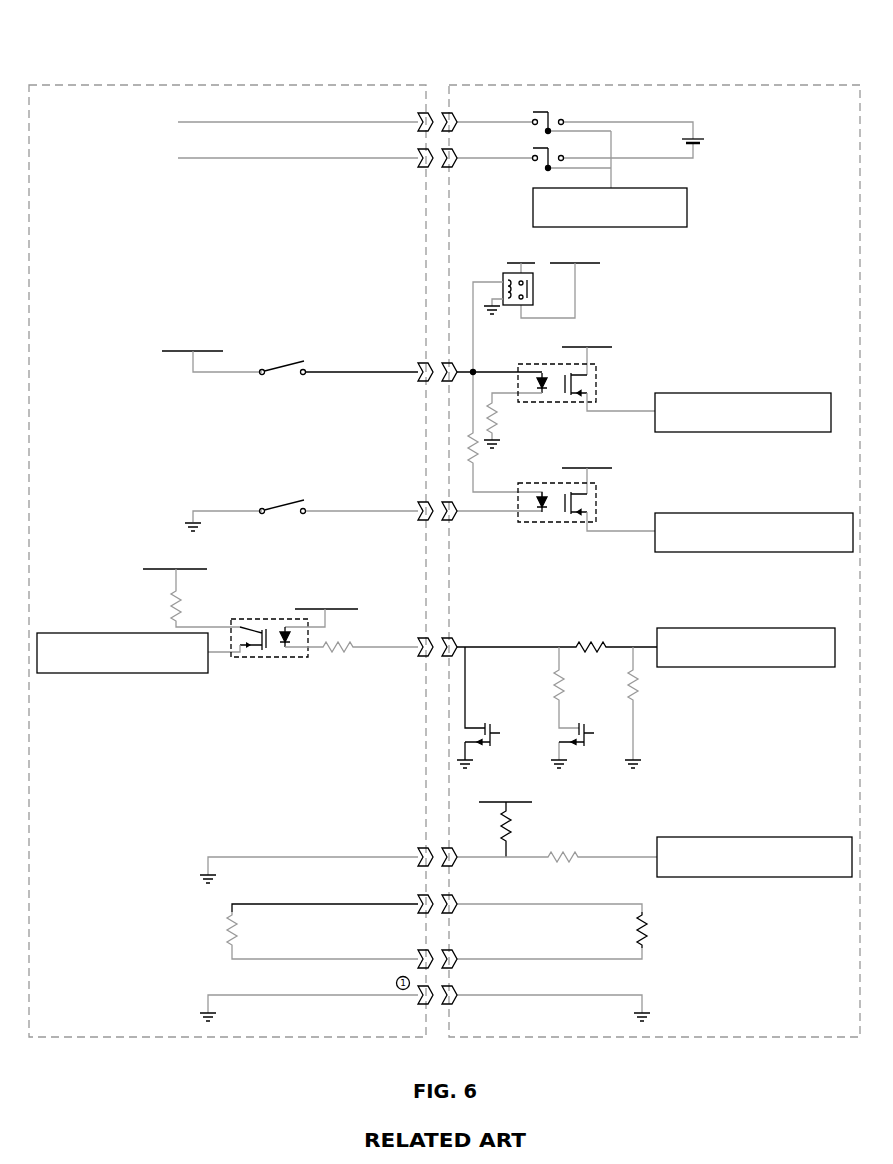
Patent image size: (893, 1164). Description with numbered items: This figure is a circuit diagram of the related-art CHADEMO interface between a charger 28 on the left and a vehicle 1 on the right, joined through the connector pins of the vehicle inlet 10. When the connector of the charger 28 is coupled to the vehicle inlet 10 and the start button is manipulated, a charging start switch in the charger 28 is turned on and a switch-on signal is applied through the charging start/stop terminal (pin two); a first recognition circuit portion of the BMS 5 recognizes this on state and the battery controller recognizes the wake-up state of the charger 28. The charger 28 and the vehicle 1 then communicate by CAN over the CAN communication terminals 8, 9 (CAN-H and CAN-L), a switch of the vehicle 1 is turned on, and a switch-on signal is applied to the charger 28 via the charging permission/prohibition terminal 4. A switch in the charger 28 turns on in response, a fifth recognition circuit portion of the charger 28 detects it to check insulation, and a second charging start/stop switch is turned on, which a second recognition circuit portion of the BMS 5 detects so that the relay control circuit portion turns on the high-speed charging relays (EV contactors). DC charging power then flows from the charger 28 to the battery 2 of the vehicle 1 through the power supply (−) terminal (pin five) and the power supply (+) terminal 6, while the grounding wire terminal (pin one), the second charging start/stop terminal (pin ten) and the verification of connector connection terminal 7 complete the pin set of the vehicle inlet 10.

The charger 28 is at (255, 85).
The vehicle 1 is at (617, 85).
The BMS 5 is at (427, 117).
The power supply (+) terminal 6 is at (427, 153).
The battery 2 is at (427, 368).
The vehicle inlet 10 is at (427, 507).
The charging permission/prohibition terminal 4 is at (427, 643).
The verification of connector connection terminal 7 is at (427, 853).
The CAN communication terminal 9 is at (427, 900).
The CAN communication terminal 8 is at (427, 955).